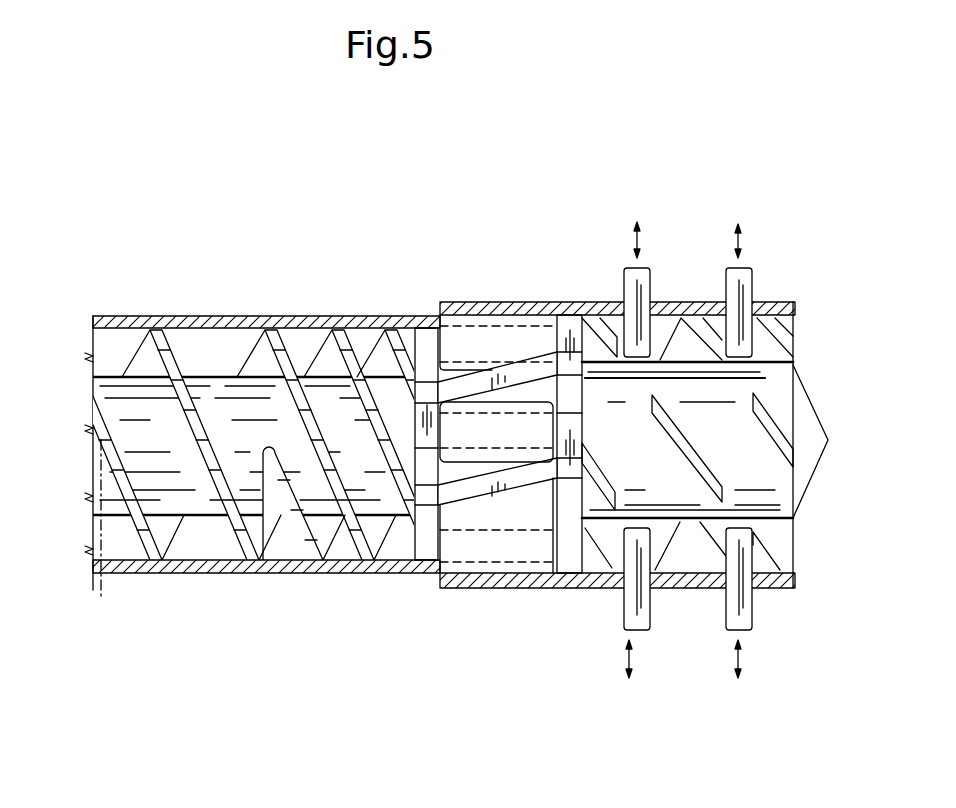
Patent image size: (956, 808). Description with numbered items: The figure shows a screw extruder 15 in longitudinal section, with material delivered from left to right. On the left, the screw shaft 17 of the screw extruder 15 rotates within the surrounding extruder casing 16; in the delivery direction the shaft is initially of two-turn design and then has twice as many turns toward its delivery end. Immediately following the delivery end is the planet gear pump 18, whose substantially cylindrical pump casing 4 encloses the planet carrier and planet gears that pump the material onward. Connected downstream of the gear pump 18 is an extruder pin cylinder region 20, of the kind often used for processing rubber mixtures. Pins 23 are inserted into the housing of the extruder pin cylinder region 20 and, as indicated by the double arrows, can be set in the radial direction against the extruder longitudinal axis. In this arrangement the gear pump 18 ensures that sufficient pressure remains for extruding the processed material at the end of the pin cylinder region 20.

The pump casing 4 is at (500, 303).
The screw extruder 15 is at (168, 640).
The extruder casing 16 is at (190, 316).
The screw shaft 17 is at (106, 537).
The planet gear pump 18 is at (443, 645).
The extruder pin cylinder region 20 is at (666, 690).
The pins 23 is at (640, 278).